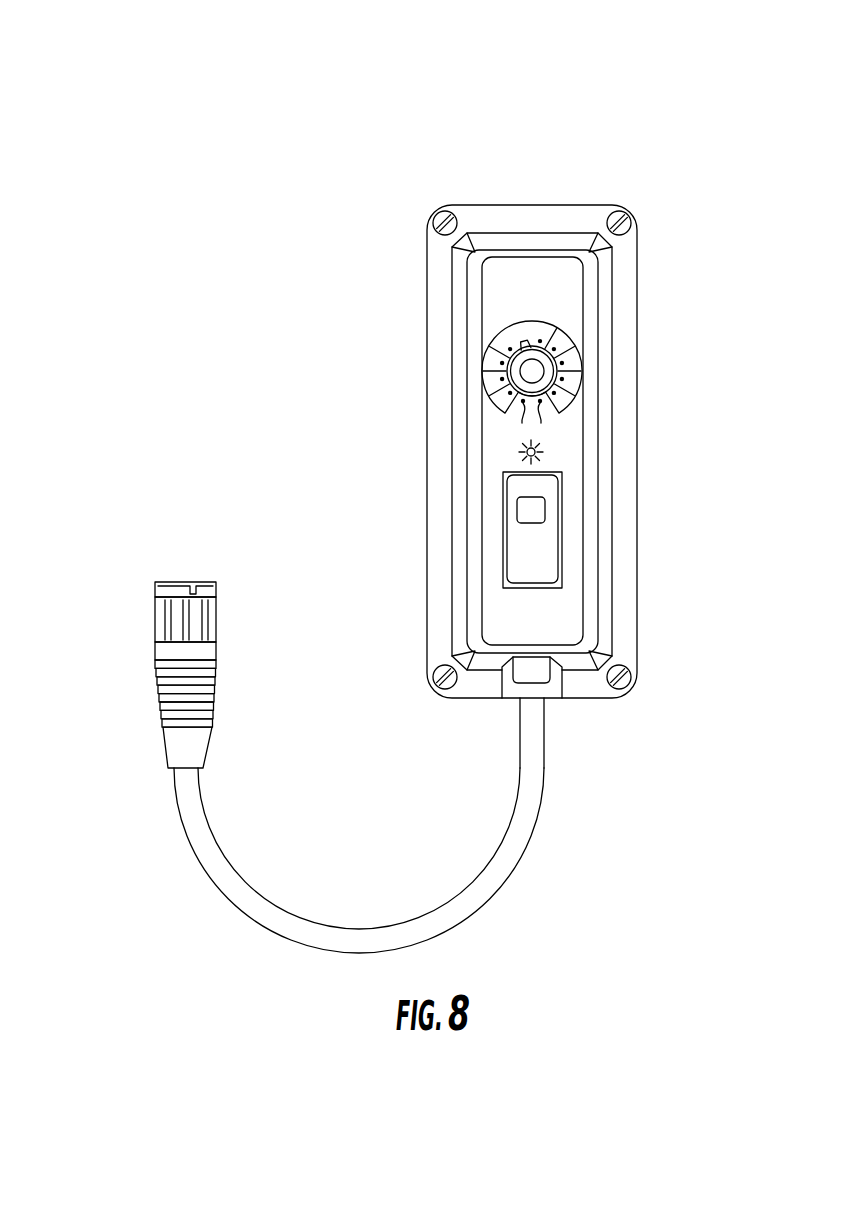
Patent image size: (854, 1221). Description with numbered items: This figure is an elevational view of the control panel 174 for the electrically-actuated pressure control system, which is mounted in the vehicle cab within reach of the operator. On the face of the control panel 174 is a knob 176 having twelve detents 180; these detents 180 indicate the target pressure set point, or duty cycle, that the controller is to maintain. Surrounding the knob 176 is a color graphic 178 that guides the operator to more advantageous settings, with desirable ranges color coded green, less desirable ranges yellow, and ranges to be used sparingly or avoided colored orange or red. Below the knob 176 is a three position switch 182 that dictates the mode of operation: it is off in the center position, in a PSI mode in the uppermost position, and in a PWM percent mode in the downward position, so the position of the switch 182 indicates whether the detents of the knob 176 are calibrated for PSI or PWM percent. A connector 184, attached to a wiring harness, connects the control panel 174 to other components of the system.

The control panel 174 is at (640, 129).
The knob 176 is at (557, 360).
The color graphic 178 is at (507, 388).
The detents 180 is at (583, 360).
The switch 182 is at (558, 547).
The connector 184 is at (155, 650).